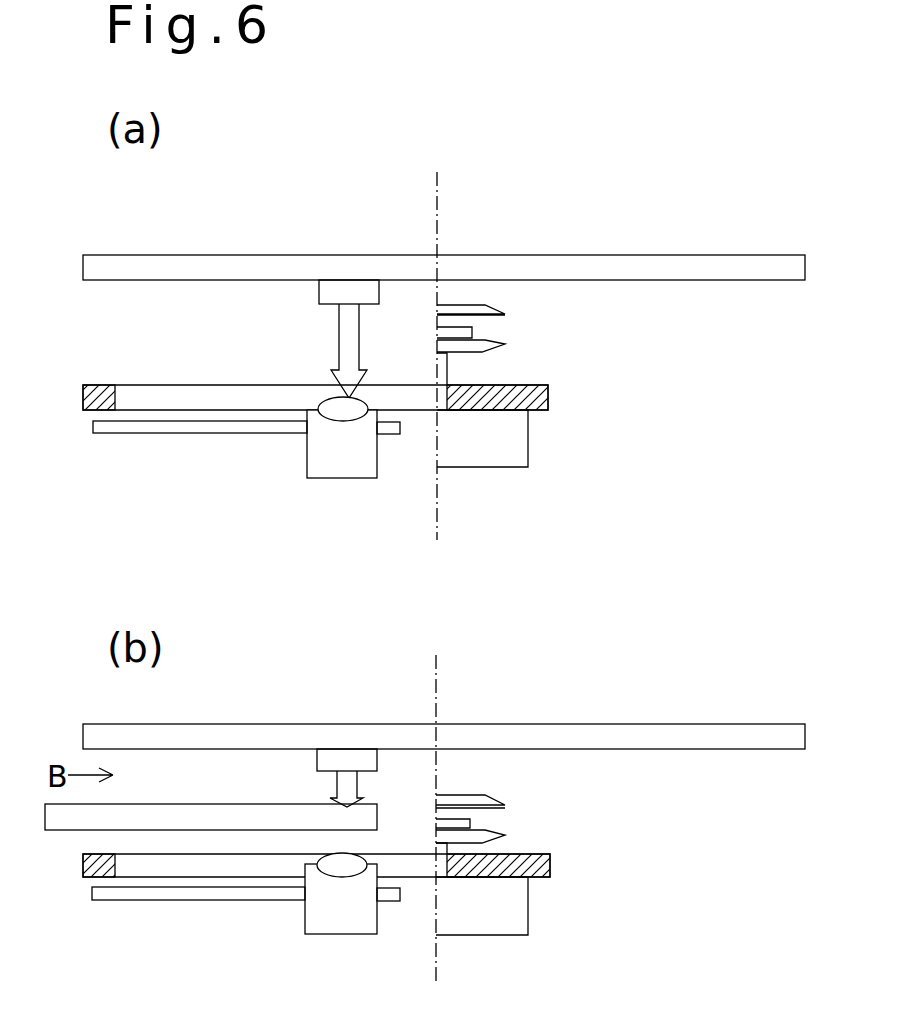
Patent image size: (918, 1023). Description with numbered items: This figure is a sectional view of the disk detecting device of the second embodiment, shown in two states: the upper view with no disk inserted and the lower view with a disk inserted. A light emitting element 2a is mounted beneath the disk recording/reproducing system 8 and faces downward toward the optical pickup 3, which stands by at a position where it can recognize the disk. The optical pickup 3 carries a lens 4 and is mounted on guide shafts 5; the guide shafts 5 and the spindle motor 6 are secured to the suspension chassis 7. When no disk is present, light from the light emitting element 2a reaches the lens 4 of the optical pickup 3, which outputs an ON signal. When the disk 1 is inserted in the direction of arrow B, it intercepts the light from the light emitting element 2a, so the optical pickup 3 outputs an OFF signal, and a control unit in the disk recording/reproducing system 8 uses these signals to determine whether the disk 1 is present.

The disk 1 is at (165, 804).
The light emitting element 2a is at (343, 288).
The optical pickup 3 is at (305, 448).
The lens 4 is at (338, 408).
The guide shafts 5 is at (193, 433).
The spindle motor 6 is at (495, 443).
The suspension chassis 7 is at (552, 397).
The disk recording/reproducing system 8 is at (447, 270).